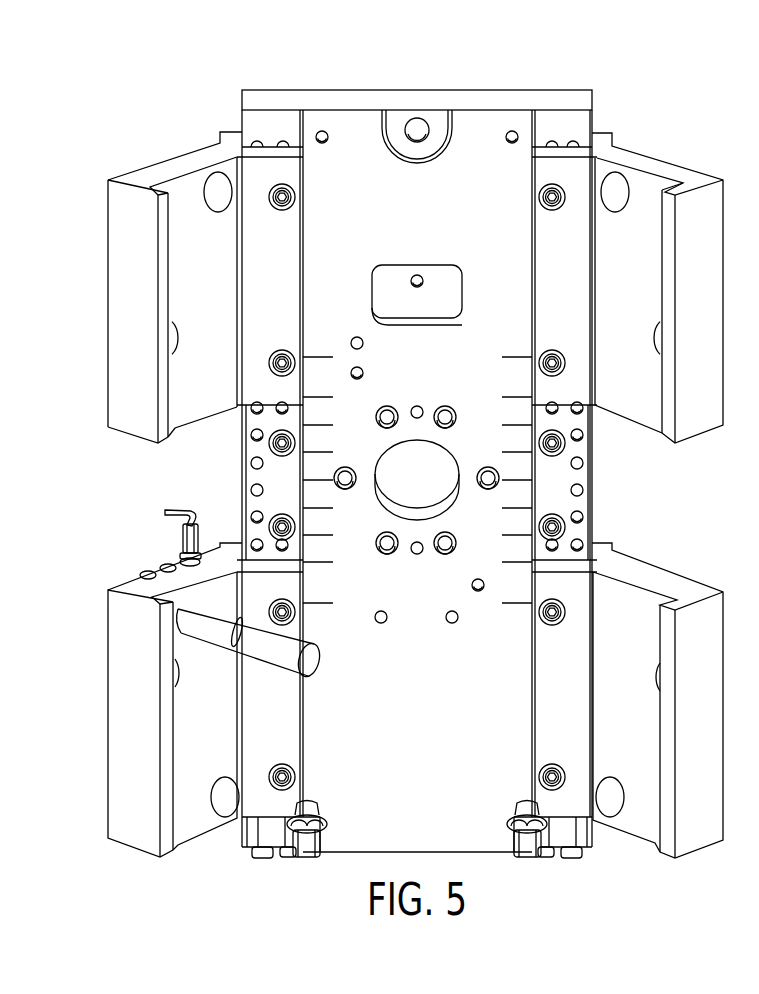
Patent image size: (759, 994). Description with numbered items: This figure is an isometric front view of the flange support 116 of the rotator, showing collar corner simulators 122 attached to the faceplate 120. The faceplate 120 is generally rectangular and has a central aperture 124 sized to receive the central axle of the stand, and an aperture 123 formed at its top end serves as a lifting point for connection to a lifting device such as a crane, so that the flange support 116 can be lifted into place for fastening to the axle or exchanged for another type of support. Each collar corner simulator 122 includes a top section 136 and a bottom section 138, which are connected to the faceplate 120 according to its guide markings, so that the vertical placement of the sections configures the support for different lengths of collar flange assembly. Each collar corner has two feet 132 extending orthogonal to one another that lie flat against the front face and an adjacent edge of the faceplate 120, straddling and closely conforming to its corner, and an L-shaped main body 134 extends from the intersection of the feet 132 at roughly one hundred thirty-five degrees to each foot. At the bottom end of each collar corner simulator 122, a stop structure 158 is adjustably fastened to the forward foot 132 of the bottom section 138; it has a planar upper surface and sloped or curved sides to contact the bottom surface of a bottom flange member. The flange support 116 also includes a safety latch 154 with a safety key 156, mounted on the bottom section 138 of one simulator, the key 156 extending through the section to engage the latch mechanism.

The flange support 116 is at (160, 112).
The faceplate 120 is at (333, 106).
The collar corner simulator 122 is at (98, 211).
The aperture 123 is at (415, 125).
The central aperture 124 is at (427, 460).
The feet 132 is at (563, 153).
The main body 134 is at (675, 183).
The top section 136 is at (108, 325).
The bottom section 138 is at (108, 722).
The safety latch 154 is at (150, 549).
The safety key 156 is at (183, 623).
The stop structure 158 is at (308, 843).